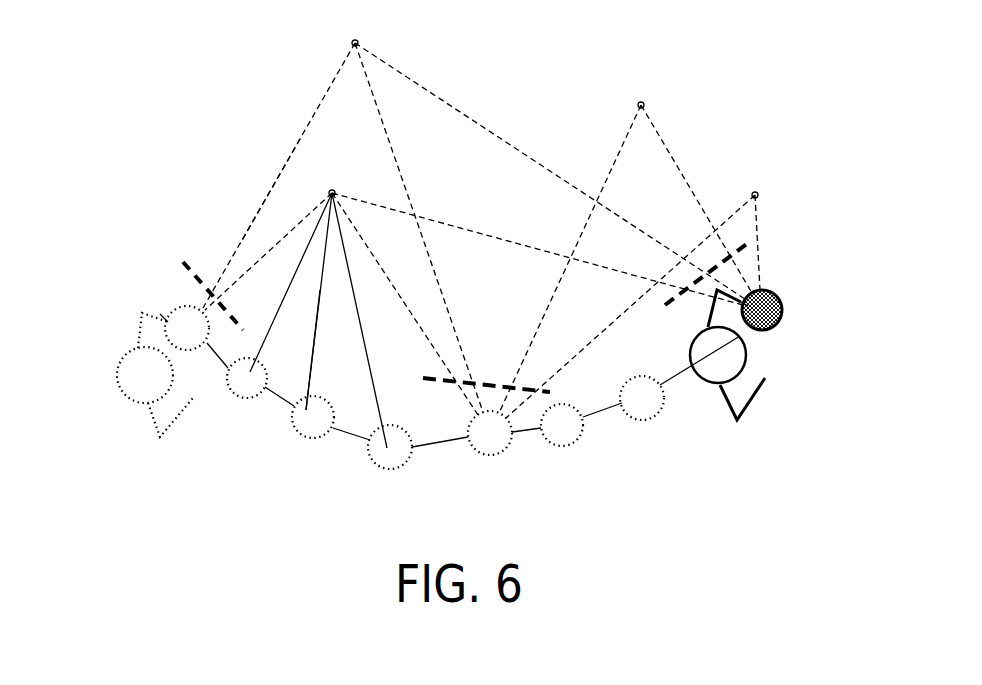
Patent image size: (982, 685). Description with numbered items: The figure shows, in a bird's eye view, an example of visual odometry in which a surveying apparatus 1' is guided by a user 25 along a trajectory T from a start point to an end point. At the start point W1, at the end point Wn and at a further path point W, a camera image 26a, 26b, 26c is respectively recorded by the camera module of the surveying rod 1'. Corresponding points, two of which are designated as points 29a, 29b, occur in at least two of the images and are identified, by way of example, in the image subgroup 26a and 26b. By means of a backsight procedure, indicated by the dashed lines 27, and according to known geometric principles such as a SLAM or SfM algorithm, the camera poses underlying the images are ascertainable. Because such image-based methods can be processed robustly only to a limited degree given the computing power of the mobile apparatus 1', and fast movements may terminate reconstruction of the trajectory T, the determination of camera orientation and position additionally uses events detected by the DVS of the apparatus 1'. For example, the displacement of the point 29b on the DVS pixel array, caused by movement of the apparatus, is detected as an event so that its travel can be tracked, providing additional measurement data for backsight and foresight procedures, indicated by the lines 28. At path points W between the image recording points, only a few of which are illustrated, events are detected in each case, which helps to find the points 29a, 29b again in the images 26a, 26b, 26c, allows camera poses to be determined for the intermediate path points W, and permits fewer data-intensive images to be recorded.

The corresponding point 29a is at (358, 45).
The corresponding point 29b is at (334, 191).
The dashed lines 27 is at (262, 186).
The lines 28 is at (305, 368).
The camera image 26a is at (196, 270).
The camera image 26b is at (430, 379).
The camera image 26c is at (748, 242).
The user 25 is at (148, 373).
The surveying apparatus 1' is at (485, 305).
The start point W1 is at (155, 325).
The path point W is at (420, 468).
The end point Wn is at (781, 292).
The trajectory T is at (593, 413).